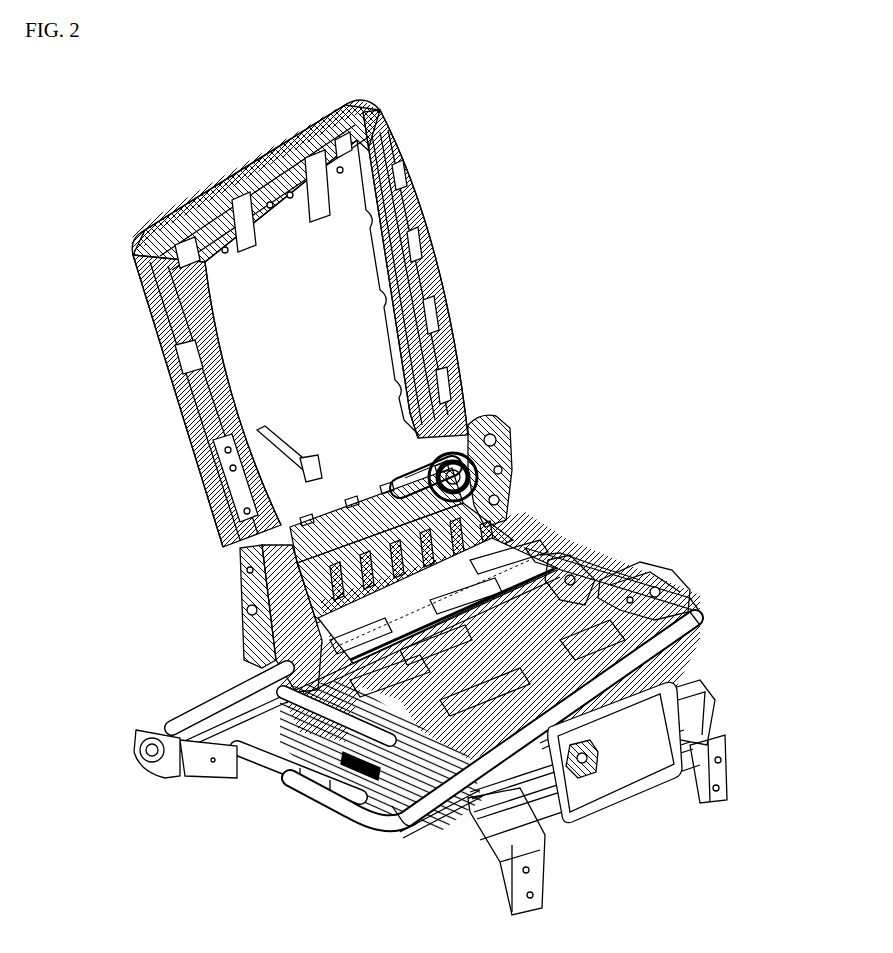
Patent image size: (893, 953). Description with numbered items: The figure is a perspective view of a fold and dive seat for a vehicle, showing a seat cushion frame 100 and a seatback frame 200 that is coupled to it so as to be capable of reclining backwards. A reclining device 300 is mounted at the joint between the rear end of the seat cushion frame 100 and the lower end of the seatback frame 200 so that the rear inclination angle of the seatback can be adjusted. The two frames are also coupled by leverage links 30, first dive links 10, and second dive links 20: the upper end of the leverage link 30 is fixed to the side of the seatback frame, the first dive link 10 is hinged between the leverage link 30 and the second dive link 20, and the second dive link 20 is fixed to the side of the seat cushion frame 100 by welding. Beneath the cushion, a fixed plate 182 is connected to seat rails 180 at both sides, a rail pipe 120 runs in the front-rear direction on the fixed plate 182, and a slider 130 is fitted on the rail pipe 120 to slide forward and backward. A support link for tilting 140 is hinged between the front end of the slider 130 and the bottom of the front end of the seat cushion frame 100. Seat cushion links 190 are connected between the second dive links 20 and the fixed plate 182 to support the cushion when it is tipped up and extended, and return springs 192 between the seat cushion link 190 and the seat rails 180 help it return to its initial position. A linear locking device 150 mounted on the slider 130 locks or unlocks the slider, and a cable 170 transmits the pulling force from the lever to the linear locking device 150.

The first dive link 10 is at (527, 507).
The second dive link 20 is at (564, 543).
The leverage link 30 is at (497, 415).
The seat cushion frame 100 is at (712, 641).
The rail pipe 120 is at (325, 800).
The slider 130 is at (405, 824).
The support link for tilting 140 is at (613, 755).
The linear locking device 150 is at (475, 838).
The cable 170 is at (580, 778).
The seat rail 180 is at (712, 727).
The fixed plate 182 is at (645, 793).
The seat cushion link 190 is at (630, 580).
The return spring 192 is at (605, 588).
The seatback frame 200 is at (468, 368).
The reclining device 300 is at (440, 447).